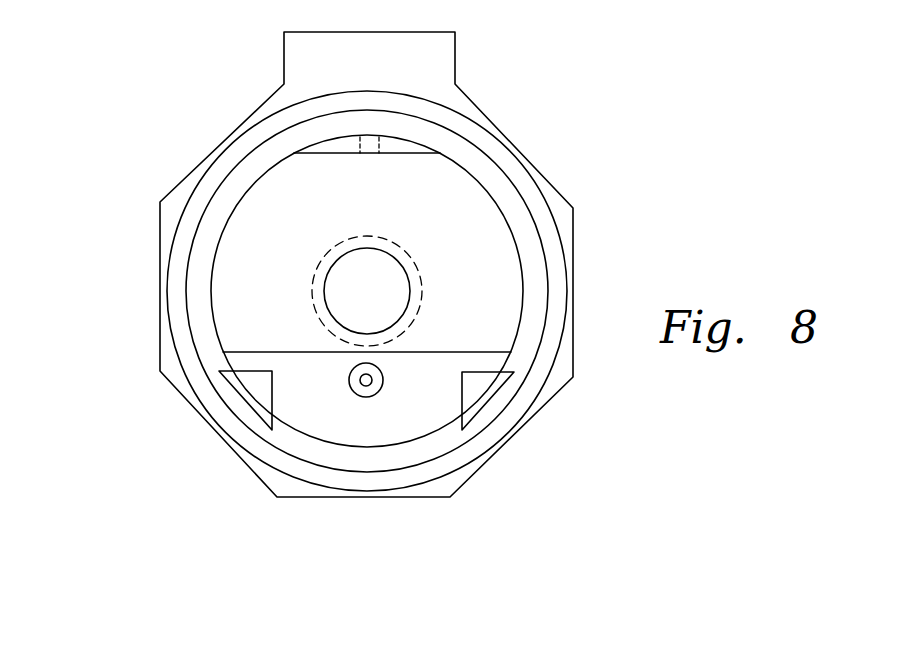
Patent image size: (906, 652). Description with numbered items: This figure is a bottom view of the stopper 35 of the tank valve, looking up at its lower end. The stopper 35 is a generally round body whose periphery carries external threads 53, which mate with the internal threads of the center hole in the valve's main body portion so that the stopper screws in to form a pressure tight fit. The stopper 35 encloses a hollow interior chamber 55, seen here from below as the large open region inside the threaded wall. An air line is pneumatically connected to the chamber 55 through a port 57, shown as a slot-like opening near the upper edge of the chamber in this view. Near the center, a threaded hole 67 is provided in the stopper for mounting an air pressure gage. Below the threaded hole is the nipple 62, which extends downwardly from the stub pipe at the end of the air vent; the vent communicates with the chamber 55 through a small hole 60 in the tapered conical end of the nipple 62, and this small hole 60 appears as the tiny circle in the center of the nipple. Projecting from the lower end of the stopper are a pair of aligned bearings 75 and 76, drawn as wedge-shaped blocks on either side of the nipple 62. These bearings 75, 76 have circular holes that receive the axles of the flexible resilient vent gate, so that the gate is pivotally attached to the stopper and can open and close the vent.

The stopper 35 is at (178, 133).
The external threads 53 is at (520, 173).
The hollow interior chamber 55 is at (315, 225).
The port 57 is at (360, 153).
The small hole 60 is at (368, 397).
The nipple 62 is at (348, 382).
The threaded hole 67 is at (383, 295).
The bearing 75 is at (252, 395).
The bearing 76 is at (458, 393).